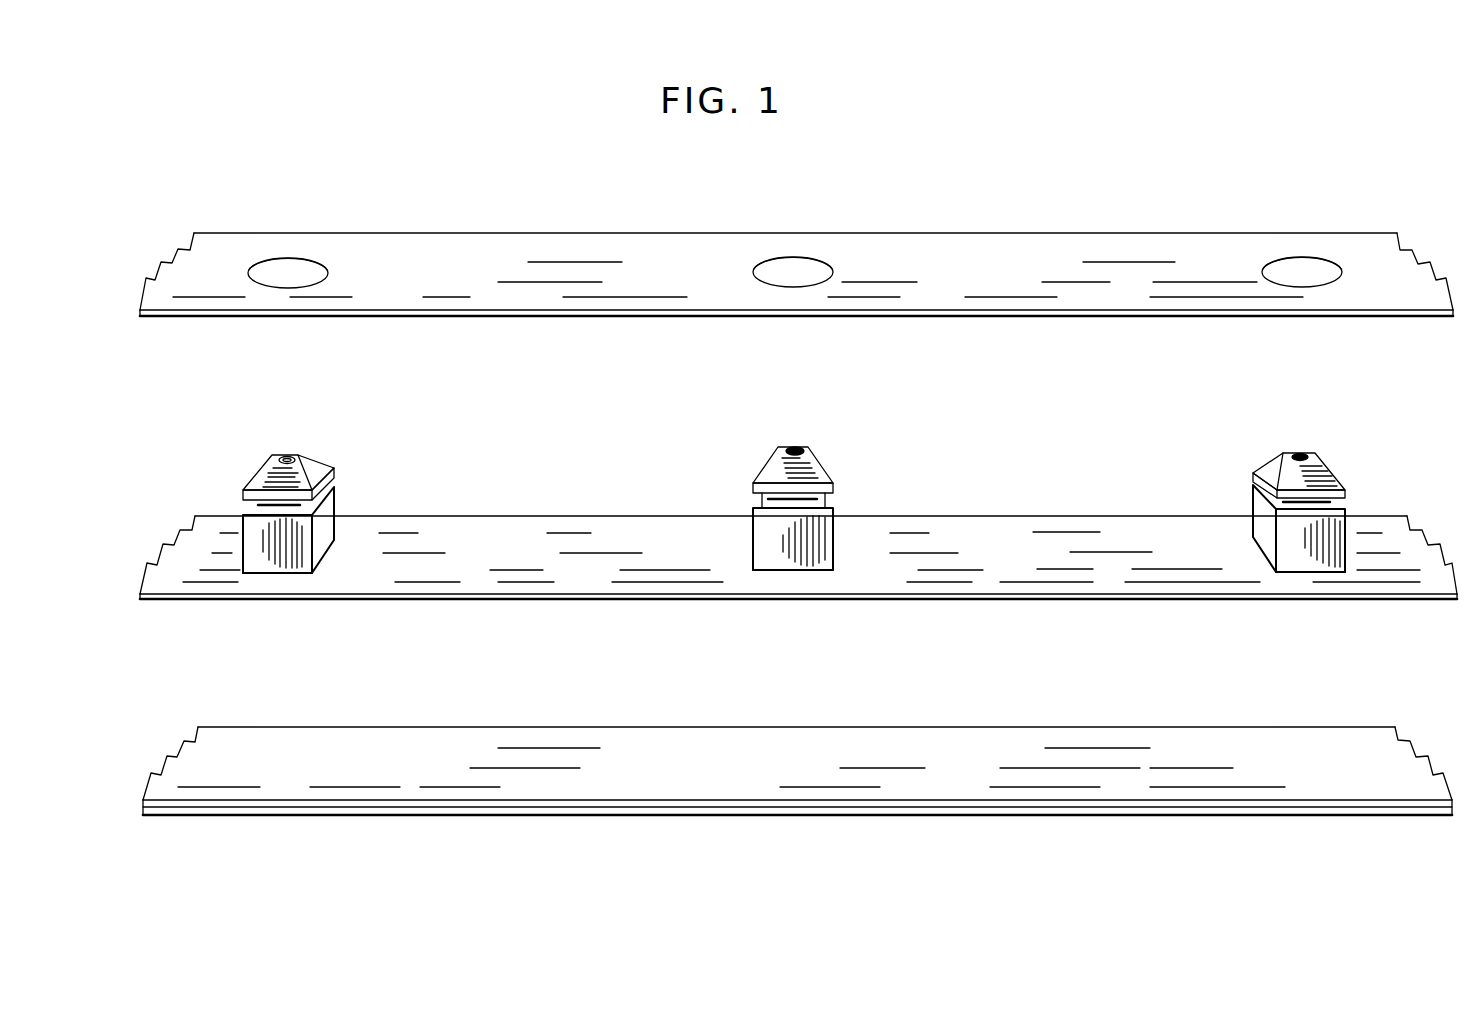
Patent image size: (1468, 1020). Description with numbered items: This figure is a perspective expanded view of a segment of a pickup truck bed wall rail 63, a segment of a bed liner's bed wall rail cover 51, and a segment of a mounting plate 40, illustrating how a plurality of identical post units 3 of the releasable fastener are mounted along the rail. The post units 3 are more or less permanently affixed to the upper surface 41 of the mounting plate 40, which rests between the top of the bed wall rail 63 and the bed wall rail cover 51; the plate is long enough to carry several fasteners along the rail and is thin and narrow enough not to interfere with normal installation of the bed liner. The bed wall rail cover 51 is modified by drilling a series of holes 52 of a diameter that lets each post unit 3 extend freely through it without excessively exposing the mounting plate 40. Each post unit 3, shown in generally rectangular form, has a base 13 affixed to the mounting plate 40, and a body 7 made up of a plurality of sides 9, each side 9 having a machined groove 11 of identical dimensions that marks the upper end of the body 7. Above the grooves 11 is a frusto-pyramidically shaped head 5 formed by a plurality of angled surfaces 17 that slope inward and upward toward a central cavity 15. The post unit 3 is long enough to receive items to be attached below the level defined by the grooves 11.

The post unit 3 is at (293, 530).
The head 5 is at (263, 467).
The body 7 is at (240, 537).
The sides 9 is at (240, 567).
The groove 11 is at (247, 509).
The base 13 is at (275, 575).
The central cavity 15 is at (287, 458).
The angled surfaces 17 is at (312, 466).
The mounting plate 40 is at (1433, 565).
The upper surface 41 is at (1387, 540).
The bed wall rail cover 51 is at (1392, 275).
The holes 52 is at (288, 272).
The bed wall rail 63 is at (1348, 740).